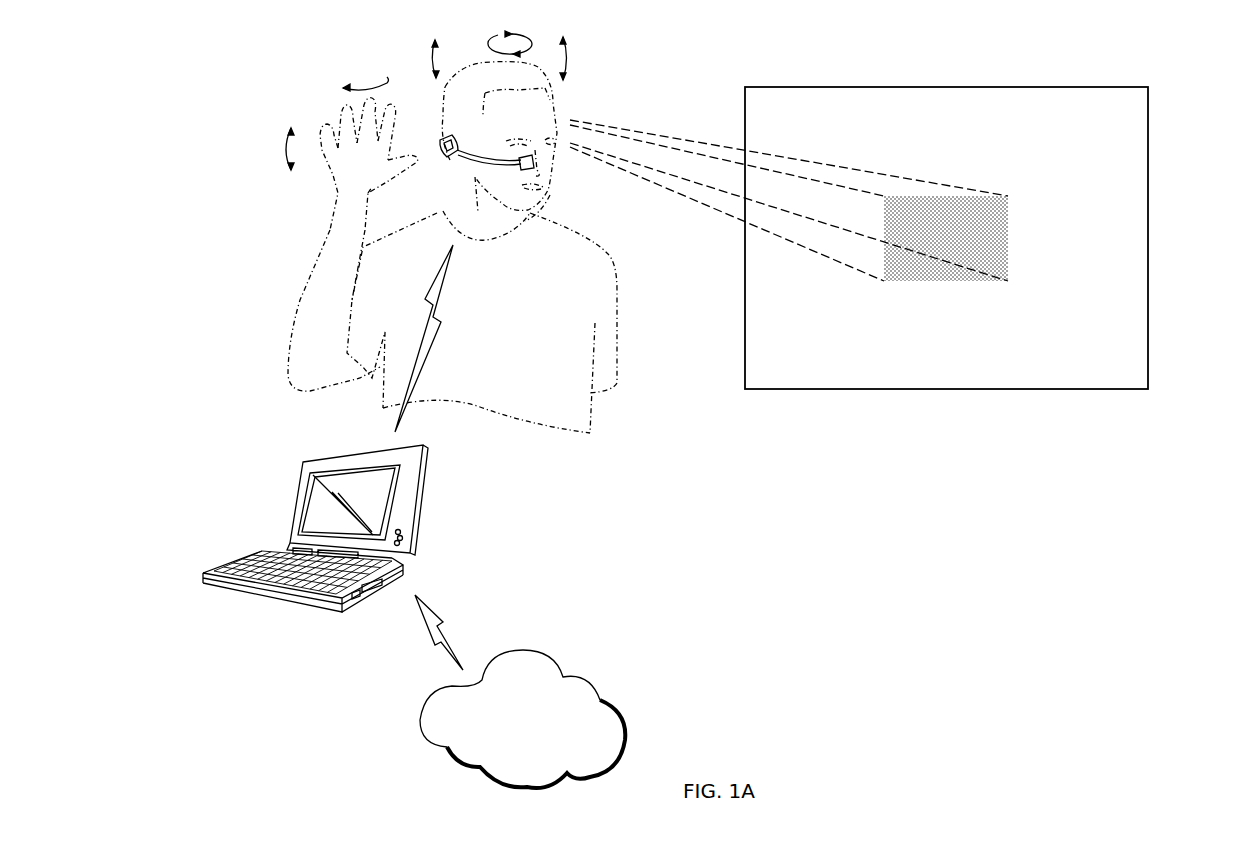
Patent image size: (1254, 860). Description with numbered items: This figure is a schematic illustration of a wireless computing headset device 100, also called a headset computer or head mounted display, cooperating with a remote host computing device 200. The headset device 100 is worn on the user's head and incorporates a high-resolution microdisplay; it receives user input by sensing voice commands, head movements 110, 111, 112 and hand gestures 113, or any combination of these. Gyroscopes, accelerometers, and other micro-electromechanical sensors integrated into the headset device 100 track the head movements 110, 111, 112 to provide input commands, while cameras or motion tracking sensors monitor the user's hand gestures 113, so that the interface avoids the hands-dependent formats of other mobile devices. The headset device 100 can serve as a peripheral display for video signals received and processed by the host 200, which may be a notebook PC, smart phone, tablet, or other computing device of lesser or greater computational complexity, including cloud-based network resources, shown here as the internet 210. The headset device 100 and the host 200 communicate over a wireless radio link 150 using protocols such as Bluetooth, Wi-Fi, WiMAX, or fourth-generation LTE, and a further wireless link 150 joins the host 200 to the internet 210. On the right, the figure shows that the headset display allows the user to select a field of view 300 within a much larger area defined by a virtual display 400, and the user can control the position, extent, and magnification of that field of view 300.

The wireless computing headset device 100 is at (467, 176).
The head movement 110 is at (490, 45).
The head movement 111 is at (567, 58).
The head movement 112 is at (432, 58).
The hand gesture 113 is at (283, 150).
The wireless radio link 150 is at (417, 364).
The remote host computing device 200 is at (422, 498).
The internet 210 is at (603, 700).
The field of view 300 is at (1008, 235).
The virtual display 400 is at (836, 389).